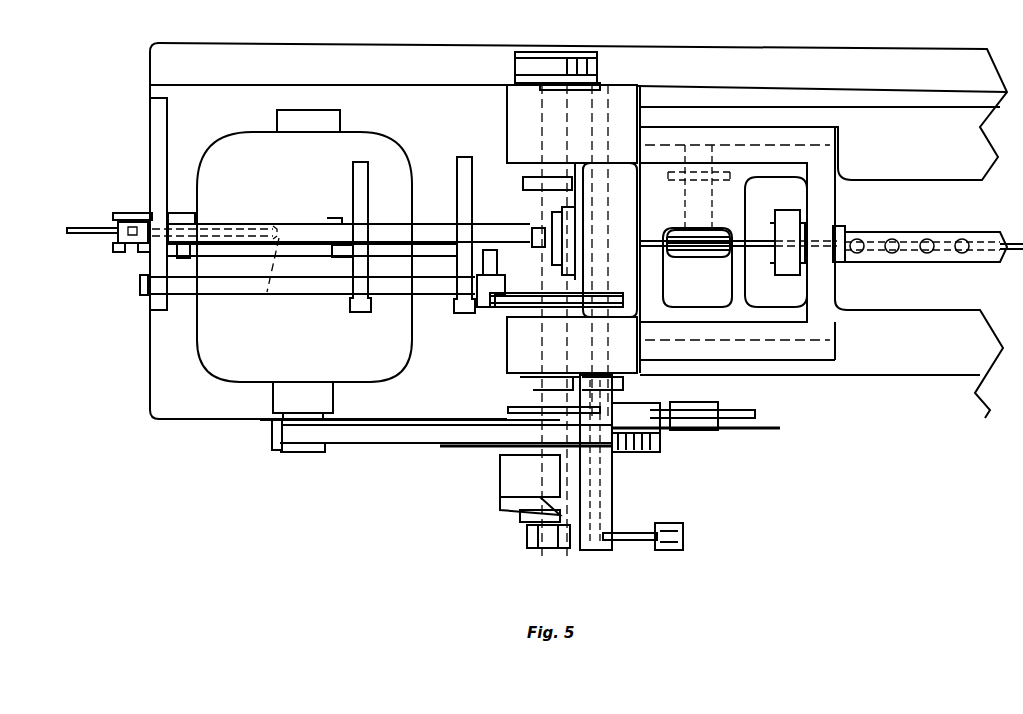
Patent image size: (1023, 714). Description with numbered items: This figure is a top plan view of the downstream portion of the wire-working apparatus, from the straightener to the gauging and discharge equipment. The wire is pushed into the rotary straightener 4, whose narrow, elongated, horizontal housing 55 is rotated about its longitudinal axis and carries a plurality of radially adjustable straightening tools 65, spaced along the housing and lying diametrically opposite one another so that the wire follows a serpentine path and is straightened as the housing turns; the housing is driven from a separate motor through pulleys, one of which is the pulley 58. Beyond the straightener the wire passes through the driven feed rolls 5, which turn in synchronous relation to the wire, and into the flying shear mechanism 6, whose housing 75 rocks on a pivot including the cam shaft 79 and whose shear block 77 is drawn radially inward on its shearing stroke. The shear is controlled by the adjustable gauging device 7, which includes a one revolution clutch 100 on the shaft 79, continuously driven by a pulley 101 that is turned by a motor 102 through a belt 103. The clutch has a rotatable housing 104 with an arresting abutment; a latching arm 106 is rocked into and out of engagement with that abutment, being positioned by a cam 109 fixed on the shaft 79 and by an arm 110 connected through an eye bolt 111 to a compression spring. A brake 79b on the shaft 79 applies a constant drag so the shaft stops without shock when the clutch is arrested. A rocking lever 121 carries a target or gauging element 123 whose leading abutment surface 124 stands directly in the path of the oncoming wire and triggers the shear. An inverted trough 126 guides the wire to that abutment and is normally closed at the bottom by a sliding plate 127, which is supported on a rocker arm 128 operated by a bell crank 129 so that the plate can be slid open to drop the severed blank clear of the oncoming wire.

The rotary straightener 4 is at (912, 225).
The driven feed rolls 5 is at (716, 271).
The flying shear mechanism 6 is at (557, 215).
The adjustable gauging device 7 is at (211, 225).
The housing 55 is at (944, 230).
The pulley 58 is at (783, 275).
The straightening tools 65 is at (857, 254).
The housing 75 is at (548, 272).
The shear block 77 is at (552, 222).
The cam shaft 79 is at (537, 358).
The brake 79b is at (520, 68).
The one revolution clutch 100 is at (500, 483).
The pulley 101 is at (457, 450).
The motor 102 is at (404, 357).
The belt 103 is at (353, 438).
The rotatable housing 104 is at (505, 503).
The latching arm 106 is at (532, 522).
The cam 109 is at (530, 549).
The arm 110 is at (633, 541).
The eye bolt 111 is at (684, 538).
The rocking lever 121 is at (115, 238).
The target or gauging element 123 is at (92, 227).
The abutment surface 124 is at (264, 276).
The inverted trough 126 is at (302, 231).
The sliding plate 127 is at (260, 250).
The rocker arm 128 is at (335, 254).
The bell crank 129 is at (487, 267).